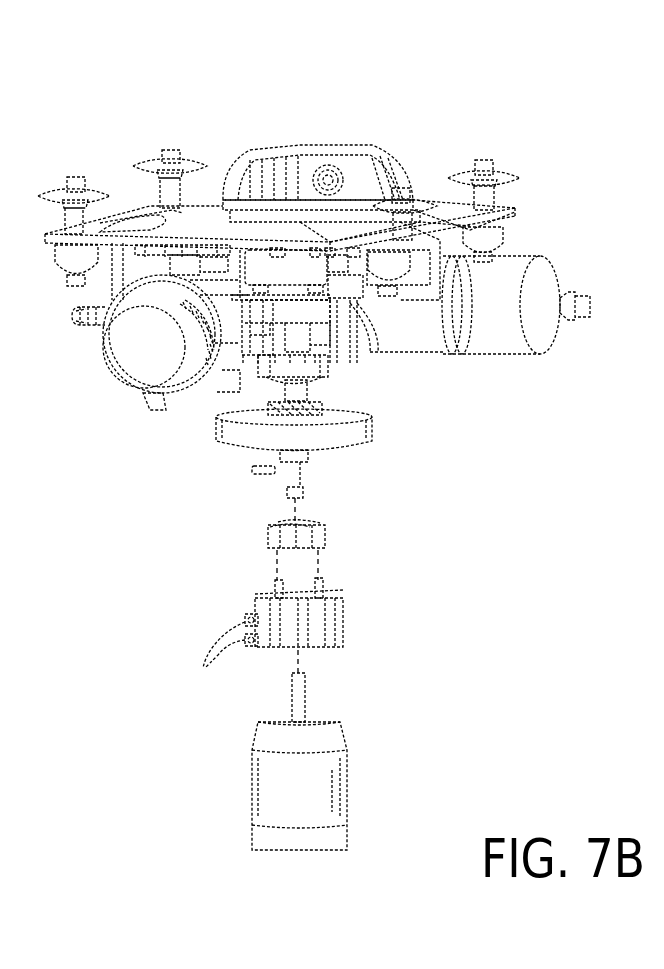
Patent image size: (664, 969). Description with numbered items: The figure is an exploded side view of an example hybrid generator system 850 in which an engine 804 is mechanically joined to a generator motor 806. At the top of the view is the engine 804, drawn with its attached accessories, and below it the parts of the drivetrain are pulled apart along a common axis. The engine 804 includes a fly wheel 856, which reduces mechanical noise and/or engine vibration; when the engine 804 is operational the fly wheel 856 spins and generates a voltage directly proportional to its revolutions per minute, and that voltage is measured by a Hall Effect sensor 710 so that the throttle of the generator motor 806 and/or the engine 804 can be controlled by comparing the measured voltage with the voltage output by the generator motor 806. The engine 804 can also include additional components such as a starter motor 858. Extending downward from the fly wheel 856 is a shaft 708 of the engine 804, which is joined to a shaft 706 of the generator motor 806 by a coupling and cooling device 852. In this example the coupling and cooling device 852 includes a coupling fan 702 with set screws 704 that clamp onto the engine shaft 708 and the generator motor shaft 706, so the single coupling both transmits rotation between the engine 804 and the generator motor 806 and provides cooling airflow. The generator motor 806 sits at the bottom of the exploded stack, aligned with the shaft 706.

The hybrid generator system 850 is at (219, 78).
The engine 804 is at (390, 95).
The fly wheel 856 is at (364, 411).
The starter motor 858 is at (238, 452).
The shaft of the engine 708 is at (298, 475).
The Hall Effect sensor 710 is at (265, 477).
The coupling and cooling device 852 is at (450, 522).
The coupling fan 702 is at (345, 628).
The set screws 704 is at (207, 664).
The shaft of the generator motor 706 is at (302, 693).
The generator motor 806 is at (262, 797).